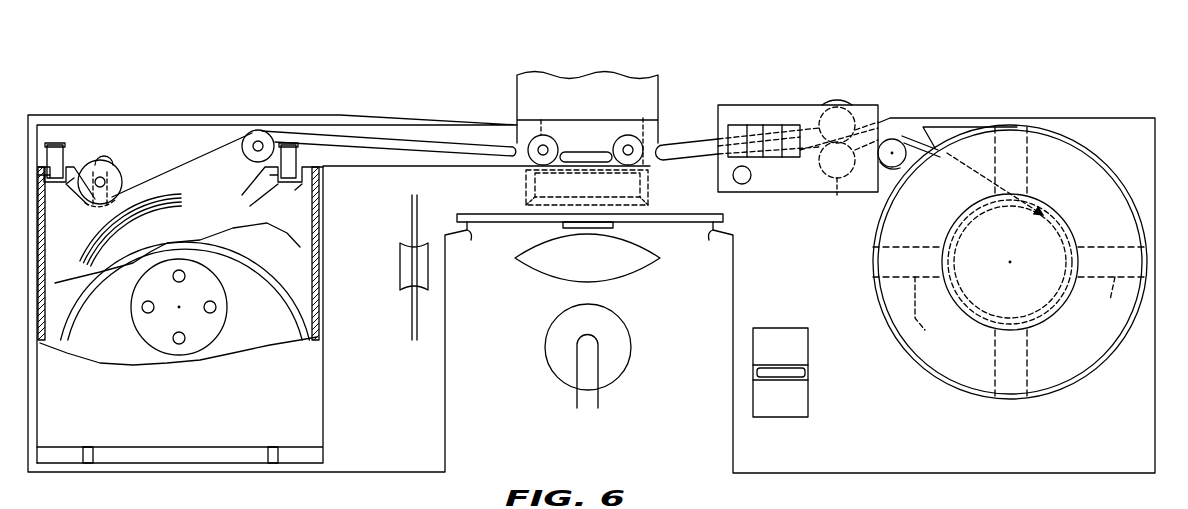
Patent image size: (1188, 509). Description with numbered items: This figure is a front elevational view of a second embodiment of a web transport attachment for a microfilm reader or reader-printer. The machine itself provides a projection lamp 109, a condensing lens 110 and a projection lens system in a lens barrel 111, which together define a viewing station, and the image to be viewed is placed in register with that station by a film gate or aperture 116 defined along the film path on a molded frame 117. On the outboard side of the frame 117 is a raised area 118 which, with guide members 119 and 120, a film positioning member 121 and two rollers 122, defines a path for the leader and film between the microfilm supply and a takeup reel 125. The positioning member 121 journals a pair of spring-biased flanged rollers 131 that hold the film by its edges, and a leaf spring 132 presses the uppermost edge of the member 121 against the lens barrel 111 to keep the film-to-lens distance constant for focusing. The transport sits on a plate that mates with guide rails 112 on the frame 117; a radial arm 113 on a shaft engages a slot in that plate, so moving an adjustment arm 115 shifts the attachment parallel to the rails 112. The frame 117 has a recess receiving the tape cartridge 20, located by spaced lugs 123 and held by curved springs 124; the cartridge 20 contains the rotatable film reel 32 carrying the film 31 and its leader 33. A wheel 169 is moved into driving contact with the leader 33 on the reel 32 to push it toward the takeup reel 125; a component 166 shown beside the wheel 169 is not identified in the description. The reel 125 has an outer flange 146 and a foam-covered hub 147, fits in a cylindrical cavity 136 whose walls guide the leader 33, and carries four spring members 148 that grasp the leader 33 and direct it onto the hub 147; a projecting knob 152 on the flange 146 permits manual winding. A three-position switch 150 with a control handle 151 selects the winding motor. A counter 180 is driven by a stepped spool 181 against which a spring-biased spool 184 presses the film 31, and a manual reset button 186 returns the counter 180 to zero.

The tape cartridge 20 is at (70, 401).
The film 31 is at (212, 232).
The film reel 32 is at (118, 352).
The leader 33 is at (165, 173).
The projection lamp 109 is at (622, 366).
The condensing lens 110 is at (640, 270).
The lens barrel 111 is at (517, 86).
The guide rails 112 is at (468, 234).
The radial arm 113 is at (563, 224).
The adjustment arm 115 is at (400, 280).
The film gate or aperture 116 is at (518, 213).
The molded frame 117 is at (448, 348).
The raised area 118 is at (366, 422).
The guide member 119 is at (420, 138).
The guide member 120 is at (697, 138).
The film positioning member 121 is at (598, 140).
The rollers 122 is at (259, 130).
The spaced lugs 123 is at (56, 143).
The curved springs 124 is at (88, 464).
The takeup reel 125 is at (1072, 357).
The rollers 131 is at (542, 134).
The leaf spring 132 is at (635, 207).
The cylindrical cavity 136 is at (950, 376).
The outer flange 146 is at (1095, 340).
The hub 147 is at (953, 222).
The spring members 148 is at (965, 345).
The three position switch 150 is at (792, 328).
The control handle 151 is at (795, 372).
The projecting knob 152 is at (1068, 224).
The roller 166 is at (100, 180).
The wheel 169 is at (112, 172).
The counter 180 is at (770, 105).
The spool 181 is at (858, 108).
The spool 184 is at (837, 195).
The manual reset button 186 is at (745, 184).